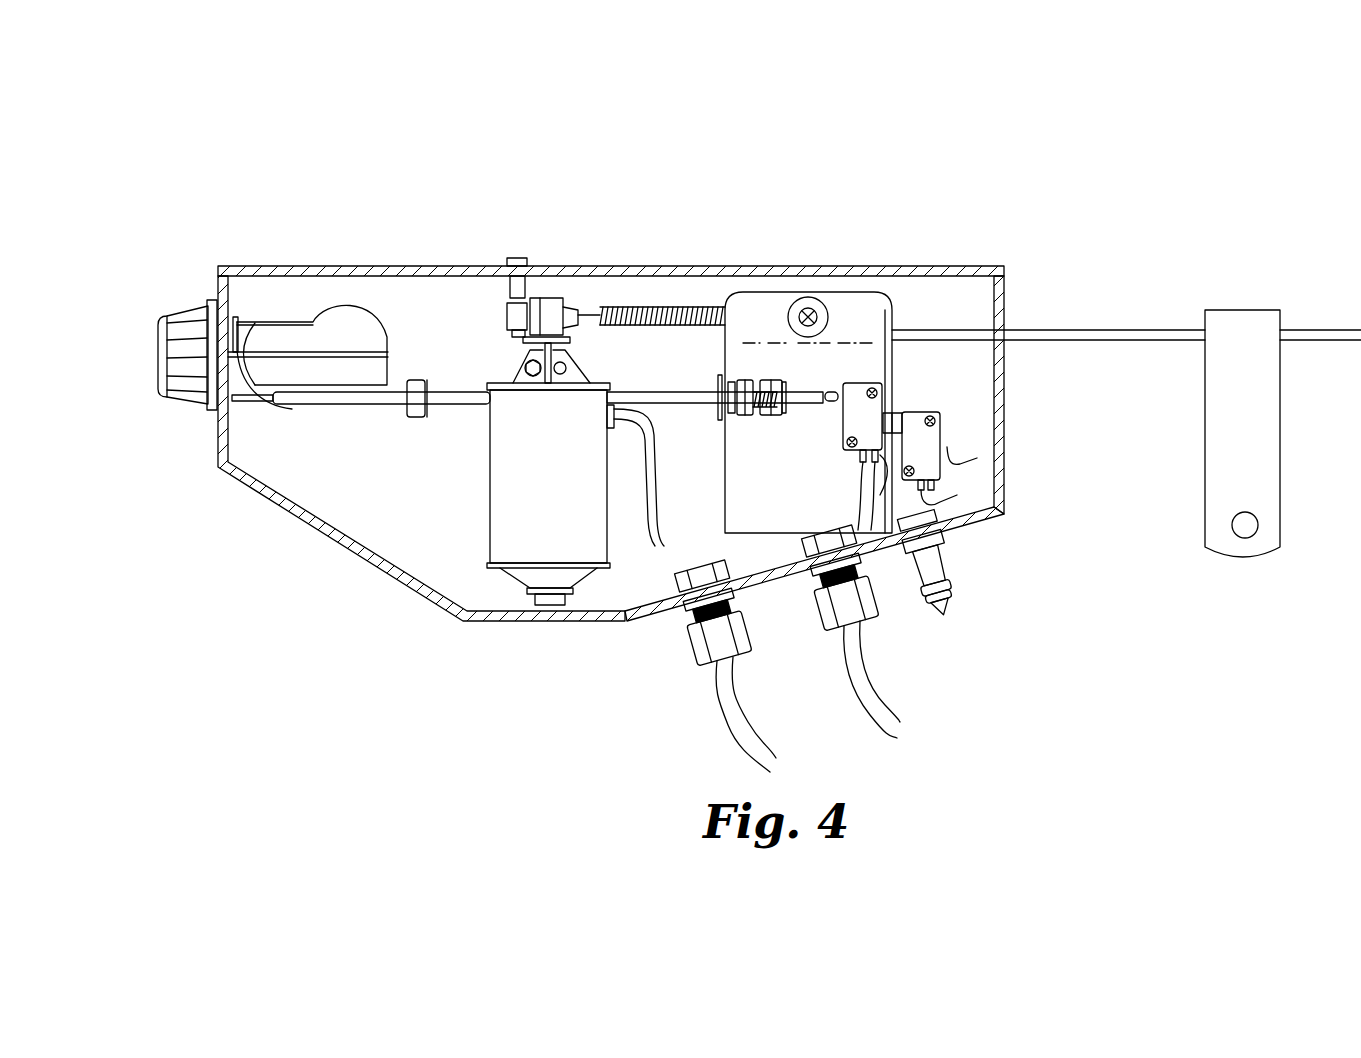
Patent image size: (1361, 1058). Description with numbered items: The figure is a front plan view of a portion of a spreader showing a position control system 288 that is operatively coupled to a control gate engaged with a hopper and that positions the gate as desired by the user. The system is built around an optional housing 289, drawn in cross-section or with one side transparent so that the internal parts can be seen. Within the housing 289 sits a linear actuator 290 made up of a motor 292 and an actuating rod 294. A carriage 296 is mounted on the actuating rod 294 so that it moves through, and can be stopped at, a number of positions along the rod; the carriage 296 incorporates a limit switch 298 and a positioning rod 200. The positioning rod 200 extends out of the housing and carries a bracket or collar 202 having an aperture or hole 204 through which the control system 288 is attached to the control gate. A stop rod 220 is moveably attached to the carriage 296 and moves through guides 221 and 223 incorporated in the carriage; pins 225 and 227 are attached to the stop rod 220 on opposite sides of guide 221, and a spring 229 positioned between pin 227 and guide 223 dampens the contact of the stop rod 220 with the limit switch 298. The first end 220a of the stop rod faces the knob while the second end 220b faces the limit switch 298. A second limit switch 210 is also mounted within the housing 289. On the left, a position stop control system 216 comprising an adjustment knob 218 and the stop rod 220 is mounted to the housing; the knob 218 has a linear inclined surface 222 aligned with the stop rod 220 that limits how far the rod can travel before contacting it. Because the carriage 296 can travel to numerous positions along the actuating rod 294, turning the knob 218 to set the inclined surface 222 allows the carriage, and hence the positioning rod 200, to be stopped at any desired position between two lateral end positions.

The position control system 288 is at (253, 226).
The linear actuator 290 is at (619, 281).
The housing 289 is at (992, 538).
The position stop control system 216 is at (400, 309).
The adjustment knob 218 is at (167, 343).
The linear inclined surface 222 is at (260, 386).
The stop rod 220 is at (321, 407).
The rod first end 220a is at (262, 400).
The rod second end 220b is at (835, 405).
The motor 292 is at (503, 530).
The actuating rod 294 is at (677, 305).
The carriage 296 is at (864, 303).
The pin 225 is at (717, 385).
The pin 227 is at (728, 420).
The guide 221 is at (743, 390).
The spring 229 is at (757, 412).
The guide 223 is at (773, 383).
The limit switch 298 is at (870, 408).
The second limit switch 210 is at (930, 436).
The positioning rod 200 is at (1106, 328).
The bracket or collar 202 is at (1247, 430).
The aperture or hole 204 is at (1257, 535).